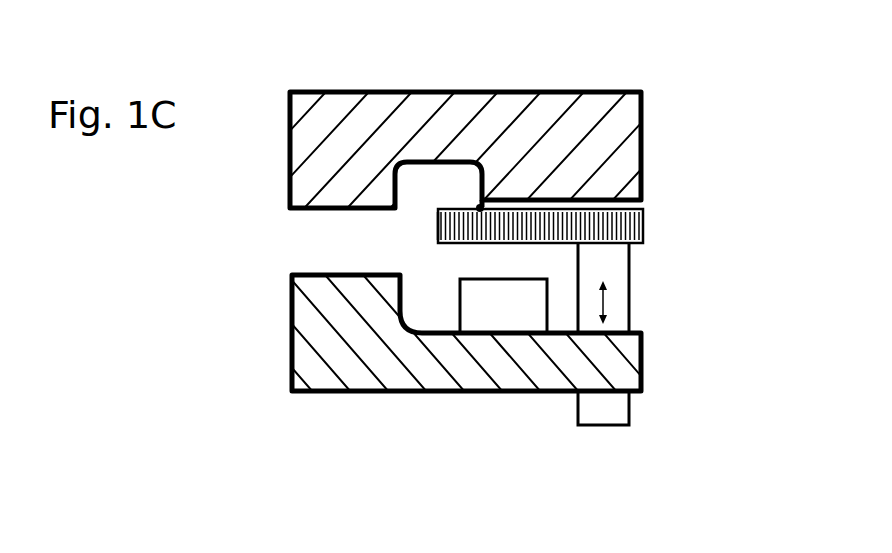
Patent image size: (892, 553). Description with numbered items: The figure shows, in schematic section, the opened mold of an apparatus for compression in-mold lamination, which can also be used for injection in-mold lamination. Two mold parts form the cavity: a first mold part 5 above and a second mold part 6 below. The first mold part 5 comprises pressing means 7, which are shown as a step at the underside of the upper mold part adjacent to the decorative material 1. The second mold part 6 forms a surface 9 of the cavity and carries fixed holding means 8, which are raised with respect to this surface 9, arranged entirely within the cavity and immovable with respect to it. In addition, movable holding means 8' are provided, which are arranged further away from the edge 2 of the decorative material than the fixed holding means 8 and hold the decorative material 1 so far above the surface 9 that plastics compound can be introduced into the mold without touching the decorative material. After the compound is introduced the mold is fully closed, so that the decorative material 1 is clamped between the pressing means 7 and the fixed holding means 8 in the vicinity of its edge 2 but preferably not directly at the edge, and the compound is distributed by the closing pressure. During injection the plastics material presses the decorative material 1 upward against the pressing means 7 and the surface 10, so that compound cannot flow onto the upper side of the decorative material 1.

The decorative material 1 is at (625, 232).
The edge of the decorative material 2 is at (437, 237).
The first mold part 5 is at (337, 175).
The second mold part 6 is at (339, 360).
The pressing means 7 is at (477, 208).
The holding means 8 is at (503, 306).
The movable holding means 8' is at (691, 415).
The surface of the cavity 9 is at (612, 329).
The surface 10 is at (630, 207).